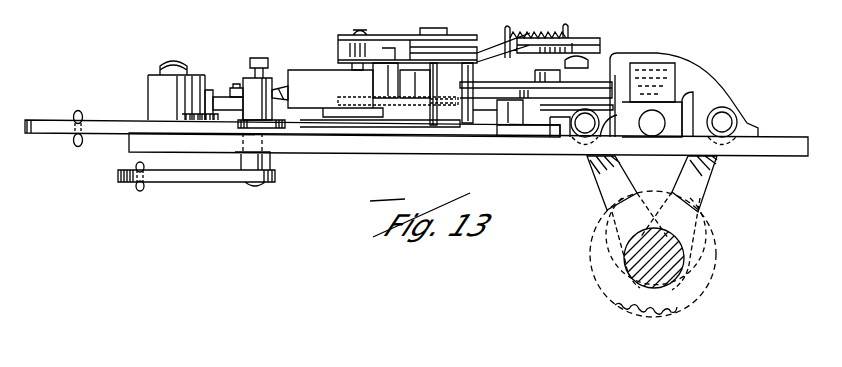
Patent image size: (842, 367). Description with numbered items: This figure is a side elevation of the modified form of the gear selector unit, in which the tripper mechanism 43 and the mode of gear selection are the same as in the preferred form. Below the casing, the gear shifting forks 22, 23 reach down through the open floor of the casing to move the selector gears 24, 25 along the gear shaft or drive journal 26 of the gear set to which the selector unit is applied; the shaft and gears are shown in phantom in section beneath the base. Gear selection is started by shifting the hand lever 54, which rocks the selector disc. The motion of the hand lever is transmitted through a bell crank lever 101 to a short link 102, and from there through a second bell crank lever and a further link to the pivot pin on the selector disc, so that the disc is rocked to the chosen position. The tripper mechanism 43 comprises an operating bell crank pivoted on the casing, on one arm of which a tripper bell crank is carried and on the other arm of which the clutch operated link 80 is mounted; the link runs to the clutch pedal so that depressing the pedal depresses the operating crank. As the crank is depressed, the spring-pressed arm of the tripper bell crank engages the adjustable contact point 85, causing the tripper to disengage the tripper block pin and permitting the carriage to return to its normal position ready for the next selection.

The gear shifting fork 22 is at (716, 198).
The gear shifting fork 23 is at (606, 193).
The selector gear 24 is at (714, 258).
The selector gear 25 is at (714, 292).
The gear shaft or drive journal 26 is at (655, 290).
The tripper mechanism 43 is at (118, 126).
The hand lever 54 is at (140, 191).
The clutch operated link 80 is at (81, 111).
The adjustable contact point 85 is at (232, 90).
The bell crank lever 101 is at (211, 182).
The short link 102 is at (316, 134).